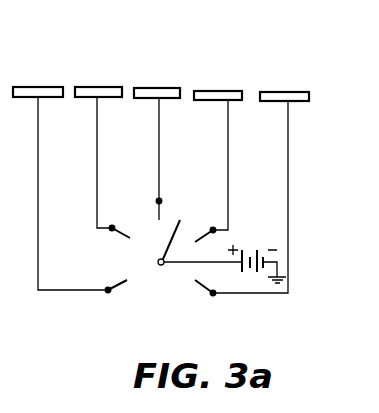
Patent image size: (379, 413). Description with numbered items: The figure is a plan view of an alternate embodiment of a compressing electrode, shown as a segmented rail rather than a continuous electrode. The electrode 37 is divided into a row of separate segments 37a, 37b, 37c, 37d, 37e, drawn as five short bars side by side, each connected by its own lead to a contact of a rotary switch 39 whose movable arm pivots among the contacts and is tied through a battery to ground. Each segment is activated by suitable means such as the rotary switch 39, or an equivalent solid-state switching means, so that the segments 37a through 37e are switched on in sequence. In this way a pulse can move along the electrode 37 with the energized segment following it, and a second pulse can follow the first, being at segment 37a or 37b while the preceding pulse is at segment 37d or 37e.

The electrode 37 is at (158, 40).
The segment 37a is at (50, 87).
The segment 37b is at (110, 87).
The segment 37c is at (168, 88).
The segment 37d is at (232, 91).
The segment 37e is at (293, 92).
The rotary switch 39 is at (163, 288).